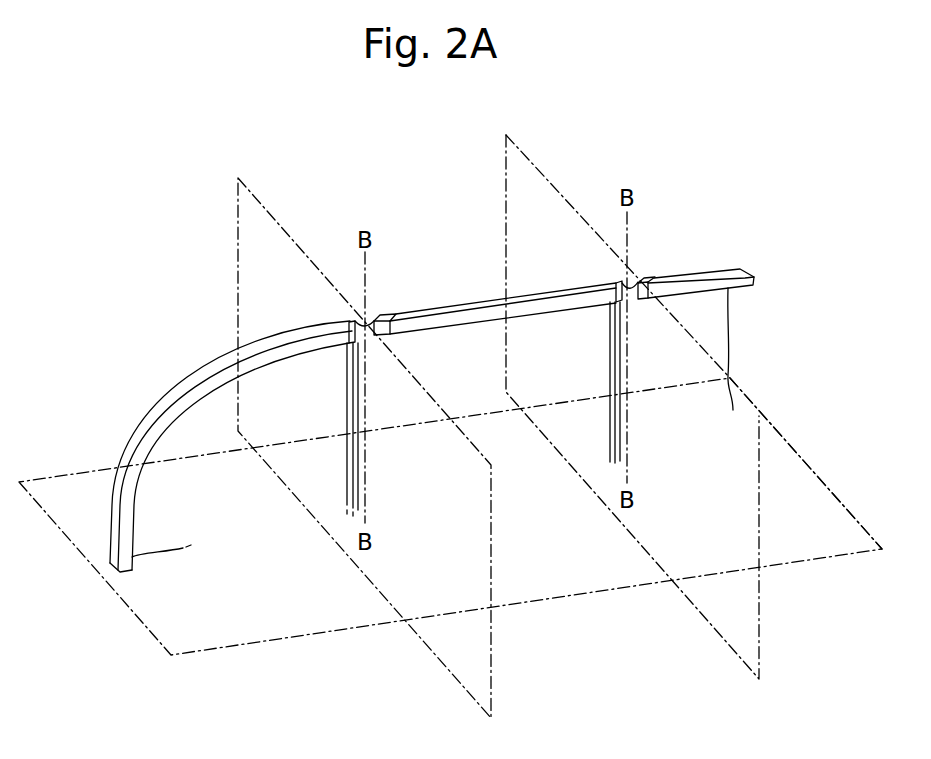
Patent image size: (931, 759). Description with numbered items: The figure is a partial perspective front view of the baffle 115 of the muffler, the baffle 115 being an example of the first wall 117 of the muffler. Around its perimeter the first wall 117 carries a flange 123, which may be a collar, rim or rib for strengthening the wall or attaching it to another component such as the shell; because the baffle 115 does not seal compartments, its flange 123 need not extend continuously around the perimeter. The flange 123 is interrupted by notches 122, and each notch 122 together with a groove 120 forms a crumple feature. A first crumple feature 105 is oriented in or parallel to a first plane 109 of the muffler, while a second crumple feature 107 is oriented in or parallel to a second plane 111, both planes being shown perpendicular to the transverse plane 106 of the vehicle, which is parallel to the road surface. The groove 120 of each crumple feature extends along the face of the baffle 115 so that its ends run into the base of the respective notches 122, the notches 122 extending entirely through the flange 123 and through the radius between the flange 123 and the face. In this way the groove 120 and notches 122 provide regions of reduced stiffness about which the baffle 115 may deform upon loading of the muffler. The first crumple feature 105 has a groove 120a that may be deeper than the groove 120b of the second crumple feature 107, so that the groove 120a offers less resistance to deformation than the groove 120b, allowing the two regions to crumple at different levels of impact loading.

The first crumple feature 105 is at (416, 463).
The transverse plane 106 is at (255, 643).
The second crumple feature 107 is at (707, 420).
The first plane 109 is at (270, 213).
The second plane 111 is at (540, 173).
The baffle 115 is at (795, 365).
The first wall 117 is at (706, 438).
The groove 120 is at (575, 442).
The groove of the first crumple feature 120a is at (358, 388).
The groove of the second crumple feature 120b is at (620, 352).
The notch 122 is at (382, 310).
The flange 123 is at (745, 272).